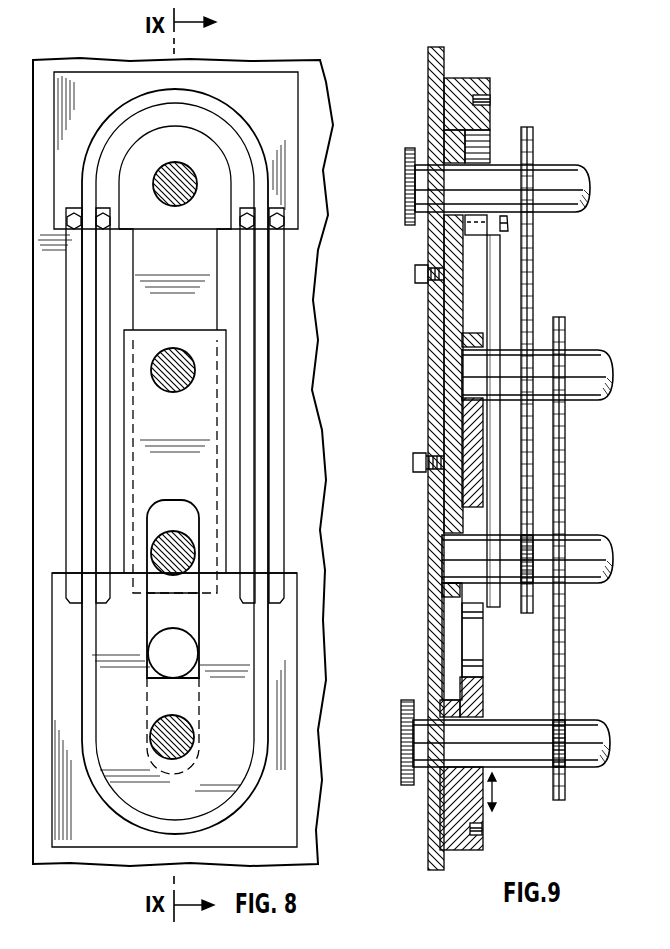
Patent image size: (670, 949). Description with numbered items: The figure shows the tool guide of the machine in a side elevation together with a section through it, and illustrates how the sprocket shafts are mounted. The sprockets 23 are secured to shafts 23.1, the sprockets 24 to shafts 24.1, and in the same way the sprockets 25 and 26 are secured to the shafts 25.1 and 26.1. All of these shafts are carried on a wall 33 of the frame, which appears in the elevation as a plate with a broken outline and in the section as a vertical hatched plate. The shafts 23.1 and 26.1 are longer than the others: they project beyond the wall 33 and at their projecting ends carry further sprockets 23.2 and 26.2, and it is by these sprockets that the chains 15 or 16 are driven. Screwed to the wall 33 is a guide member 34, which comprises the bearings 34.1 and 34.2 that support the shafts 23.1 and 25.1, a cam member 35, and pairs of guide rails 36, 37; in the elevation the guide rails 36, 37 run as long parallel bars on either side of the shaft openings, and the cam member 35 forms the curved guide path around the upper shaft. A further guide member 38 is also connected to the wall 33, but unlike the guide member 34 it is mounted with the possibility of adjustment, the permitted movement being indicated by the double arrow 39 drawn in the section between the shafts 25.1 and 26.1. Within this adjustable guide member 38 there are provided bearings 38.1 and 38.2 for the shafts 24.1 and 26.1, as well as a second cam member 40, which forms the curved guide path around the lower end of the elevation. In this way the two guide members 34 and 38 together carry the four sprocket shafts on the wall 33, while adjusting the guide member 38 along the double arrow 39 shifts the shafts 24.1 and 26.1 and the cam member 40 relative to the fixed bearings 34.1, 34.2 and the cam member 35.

In FIG. 9, the chain 15 is at (528, 267).
In FIG. 9, the chain 16 is at (565, 456).
In FIG. 9, the sprocket 23 is at (533, 136).
In FIG. 8, the shaft 23.1 is at (178, 202).
In FIG. 9, the shaft 23.1 is at (563, 178).
In FIG. 9, the sprocket 23.2 is at (408, 180).
In FIG. 9, the sprocket 24 is at (564, 336).
In FIG. 8, the shaft 24.1 is at (174, 386).
In FIG. 9, the shaft 24.1 is at (594, 388).
In FIG. 9, the sprocket 25 is at (528, 546).
In FIG. 8, the shaft 25.1 is at (170, 536).
In FIG. 9, the shaft 25.1 is at (589, 570).
In FIG. 9, the sprocket 26 is at (565, 718).
In FIG. 8, the shaft 26.1 is at (190, 731).
In FIG. 9, the shaft 26.1 is at (587, 758).
In FIG. 9, the sprocket 26.2 is at (404, 742).
In FIG. 8, the wall 33 is at (292, 67).
In FIG. 9, the wall 33 is at (436, 63).
In FIG. 8, the guide member 34 is at (288, 160).
In FIG. 9, the guide member 34 is at (465, 80).
In FIG. 9, the bearing 34.1 is at (445, 220).
In FIG. 9, the bearing 34.2 is at (442, 587).
In FIG. 8, the cam member 35 is at (240, 127).
In FIG. 9, the cam member 35 is at (490, 100).
In FIG. 8, the guide rail 36 is at (100, 283).
In FIG. 8, the guide rail 37 is at (250, 290).
In FIG. 9, the guide rail 37 is at (495, 288).
In FIG. 8, the guide member 38 is at (285, 830).
In FIG. 9, the guide member 38 is at (465, 850).
In FIG. 9, the bearing 38.1 is at (483, 713).
In FIG. 9, the bearing 38.2 is at (465, 405).
In FIG. 9, the double arrow 39 is at (497, 794).
In FIG. 8, the cam member 40 is at (238, 797).
In FIG. 9, the cam member 40 is at (483, 831).